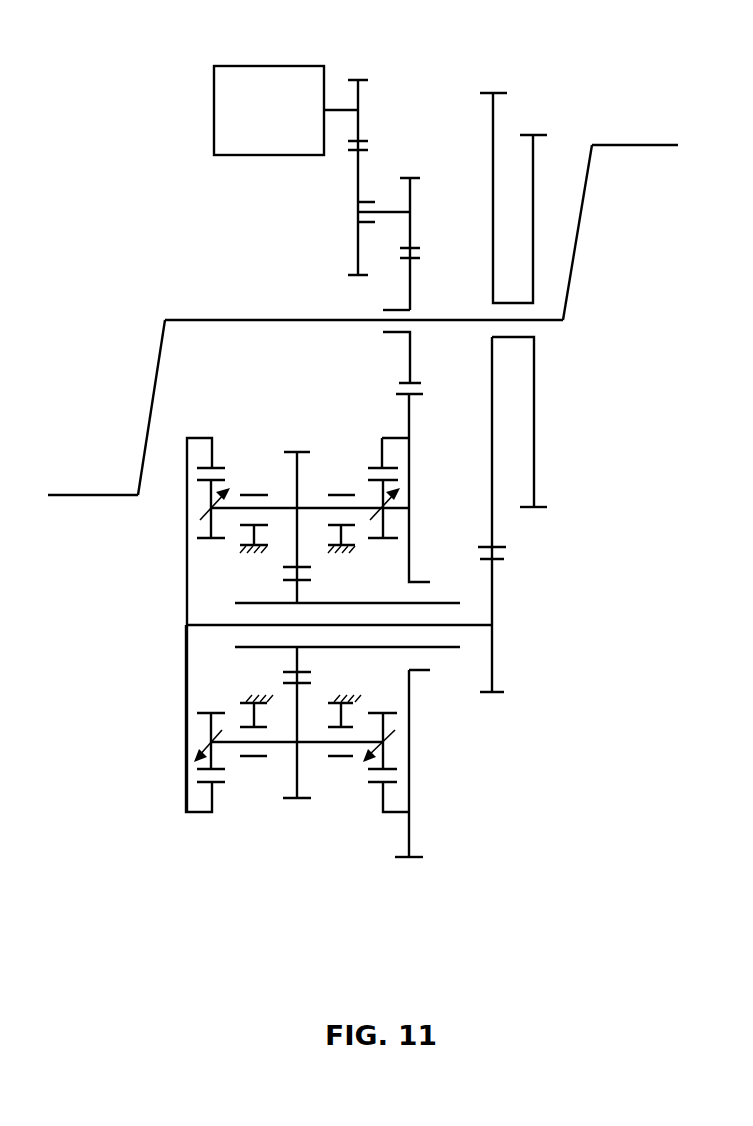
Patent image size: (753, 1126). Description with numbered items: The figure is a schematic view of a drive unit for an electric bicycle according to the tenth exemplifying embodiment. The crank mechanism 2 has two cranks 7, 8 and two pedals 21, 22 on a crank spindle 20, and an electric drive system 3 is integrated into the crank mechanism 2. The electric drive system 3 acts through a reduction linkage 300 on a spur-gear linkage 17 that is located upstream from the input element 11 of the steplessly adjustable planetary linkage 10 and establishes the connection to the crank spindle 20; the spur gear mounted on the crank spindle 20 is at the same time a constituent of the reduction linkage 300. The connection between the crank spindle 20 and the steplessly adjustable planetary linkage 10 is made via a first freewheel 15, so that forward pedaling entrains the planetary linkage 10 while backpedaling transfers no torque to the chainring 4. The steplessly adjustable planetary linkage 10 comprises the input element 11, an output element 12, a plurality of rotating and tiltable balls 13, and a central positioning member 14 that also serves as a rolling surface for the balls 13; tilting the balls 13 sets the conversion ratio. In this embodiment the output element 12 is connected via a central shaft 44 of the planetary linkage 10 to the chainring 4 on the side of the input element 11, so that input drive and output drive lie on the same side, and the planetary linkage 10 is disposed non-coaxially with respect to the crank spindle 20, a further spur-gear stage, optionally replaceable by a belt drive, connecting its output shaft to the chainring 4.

The crank mechanism 2 is at (595, 351).
The electric drive system 3 is at (268, 78).
The chainring 4 is at (533, 160).
The crank 7 is at (580, 220).
The crank 8 is at (152, 403).
The steplessly adjustable planetary linkage 10 is at (393, 836).
The input element 11 is at (382, 456).
The output element 12 is at (212, 456).
The balls 13 is at (283, 506).
The central positioning member 14 is at (277, 603).
The first freewheel 15 is at (412, 315).
The spur-gear linkage 17 is at (428, 238).
The crank spindle 20 is at (228, 319).
The pedal 21 is at (642, 145).
The pedal 22 is at (78, 495).
The central shaft 44 is at (428, 625).
The reduction linkage 300 is at (381, 138).